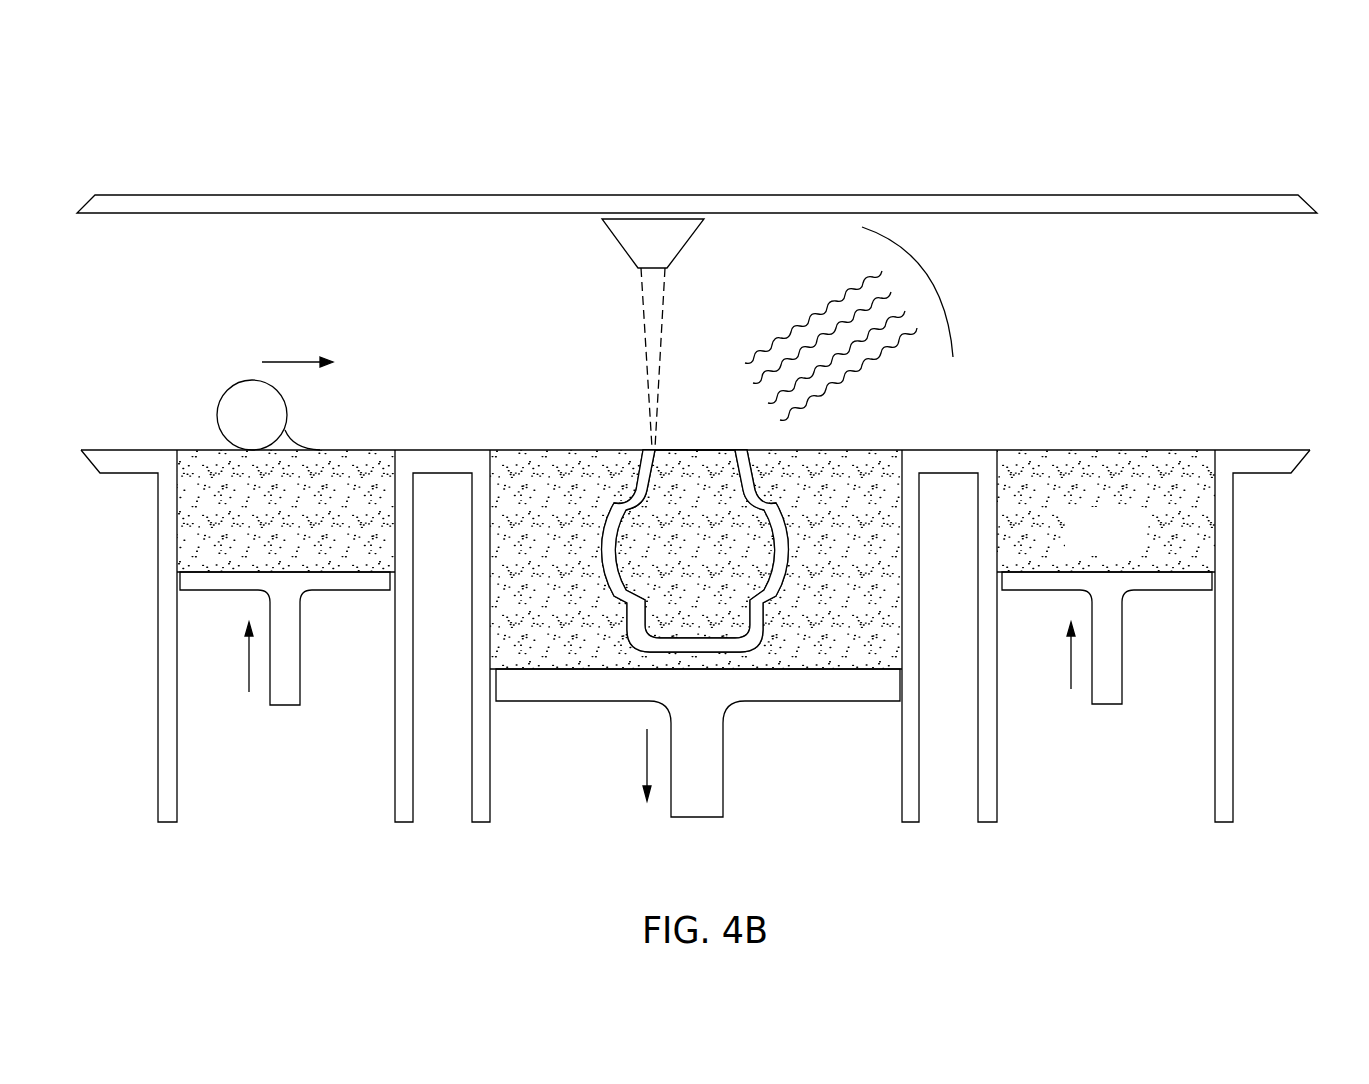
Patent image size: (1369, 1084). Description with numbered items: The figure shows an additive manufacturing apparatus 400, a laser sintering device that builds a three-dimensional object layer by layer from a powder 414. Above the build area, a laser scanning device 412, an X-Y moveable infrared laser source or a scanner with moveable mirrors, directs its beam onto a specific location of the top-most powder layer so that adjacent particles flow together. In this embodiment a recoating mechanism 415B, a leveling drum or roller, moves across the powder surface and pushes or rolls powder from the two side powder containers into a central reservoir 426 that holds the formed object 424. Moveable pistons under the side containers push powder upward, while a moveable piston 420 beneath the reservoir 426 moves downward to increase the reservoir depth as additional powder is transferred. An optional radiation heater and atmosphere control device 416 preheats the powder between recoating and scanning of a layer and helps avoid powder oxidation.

The additive manufacturing apparatus 400 is at (872, 100).
The laser scanning device 412 is at (618, 188).
The powder 414 is at (1245, 428).
The recoating mechanism 415B is at (148, 347).
The radiation heater and/or atmosphere control device 416 is at (1180, 295).
The moveable piston 420 is at (691, 819).
The formed object 424 is at (607, 525).
The reservoir 426 is at (820, 448).